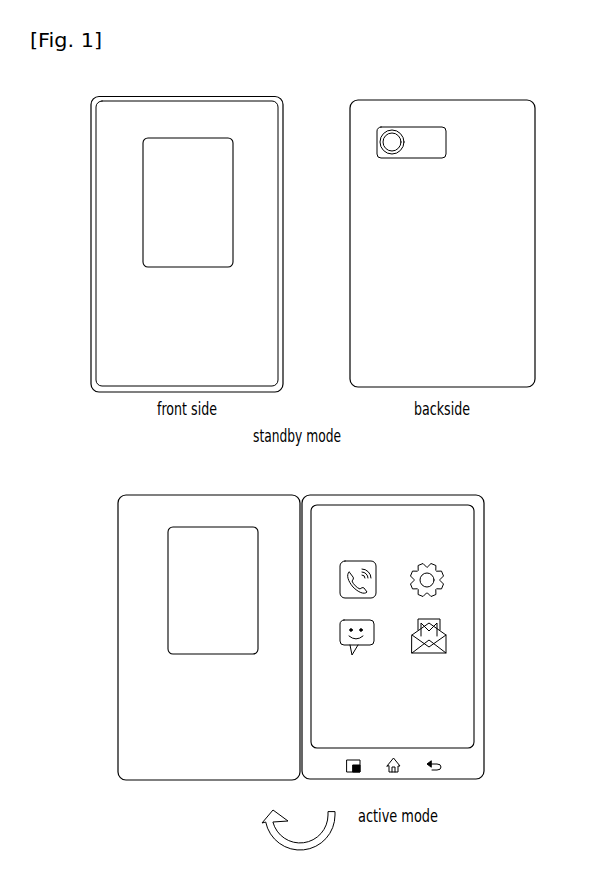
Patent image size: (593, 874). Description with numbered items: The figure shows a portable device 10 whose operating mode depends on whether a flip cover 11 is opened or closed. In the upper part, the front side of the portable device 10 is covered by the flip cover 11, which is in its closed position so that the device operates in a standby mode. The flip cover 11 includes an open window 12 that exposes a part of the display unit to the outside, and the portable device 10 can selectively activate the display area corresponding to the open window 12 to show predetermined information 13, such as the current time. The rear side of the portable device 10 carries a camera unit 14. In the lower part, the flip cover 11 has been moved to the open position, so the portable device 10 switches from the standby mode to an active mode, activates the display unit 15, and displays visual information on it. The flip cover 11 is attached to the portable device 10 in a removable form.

The portable device 10 is at (283, 288).
The flip cover 11 is at (267, 372).
The open window 12 is at (218, 165).
The predetermined information 13 is at (222, 205).
The camera unit 14 is at (392, 142).
The display unit 15 is at (465, 697).